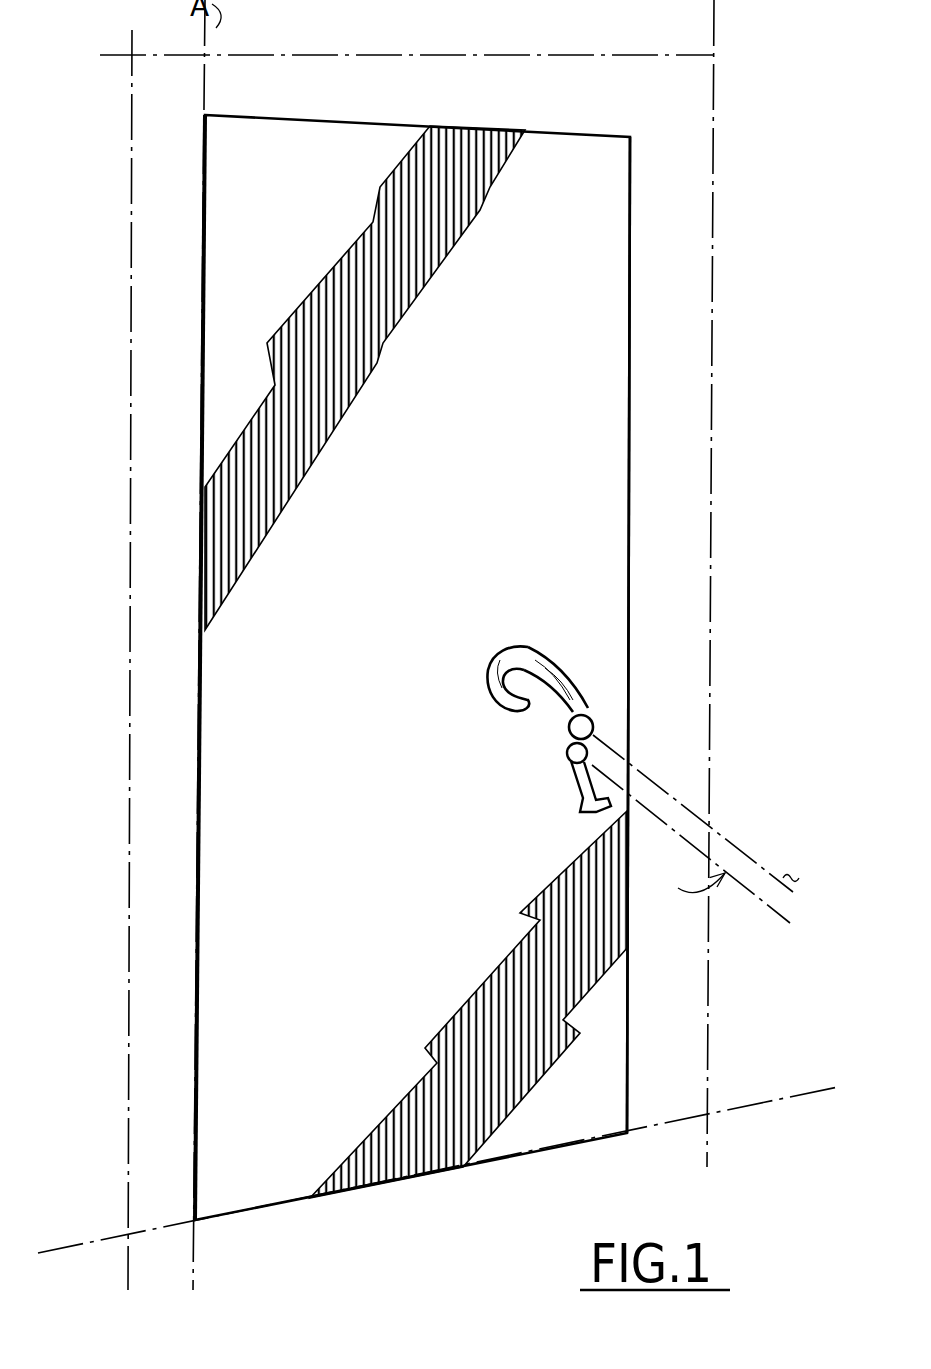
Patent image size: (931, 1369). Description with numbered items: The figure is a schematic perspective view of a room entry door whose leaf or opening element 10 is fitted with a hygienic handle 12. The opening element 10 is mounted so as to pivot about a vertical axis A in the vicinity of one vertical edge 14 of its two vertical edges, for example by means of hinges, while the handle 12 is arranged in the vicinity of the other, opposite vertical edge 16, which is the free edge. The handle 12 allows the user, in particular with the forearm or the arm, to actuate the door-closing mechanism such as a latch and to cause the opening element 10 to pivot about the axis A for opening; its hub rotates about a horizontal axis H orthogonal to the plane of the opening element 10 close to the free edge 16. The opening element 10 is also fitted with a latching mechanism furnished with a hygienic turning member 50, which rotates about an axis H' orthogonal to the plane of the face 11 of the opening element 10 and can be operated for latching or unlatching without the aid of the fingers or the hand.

The opening element 10 is at (441, 667).
The face 11 is at (433, 667).
The hygienic handle 12 is at (574, 654).
The vertical edge 14 is at (193, 493).
The opposite vertical edge 16 is at (630, 422).
The hygienic turning member 50 is at (570, 780).